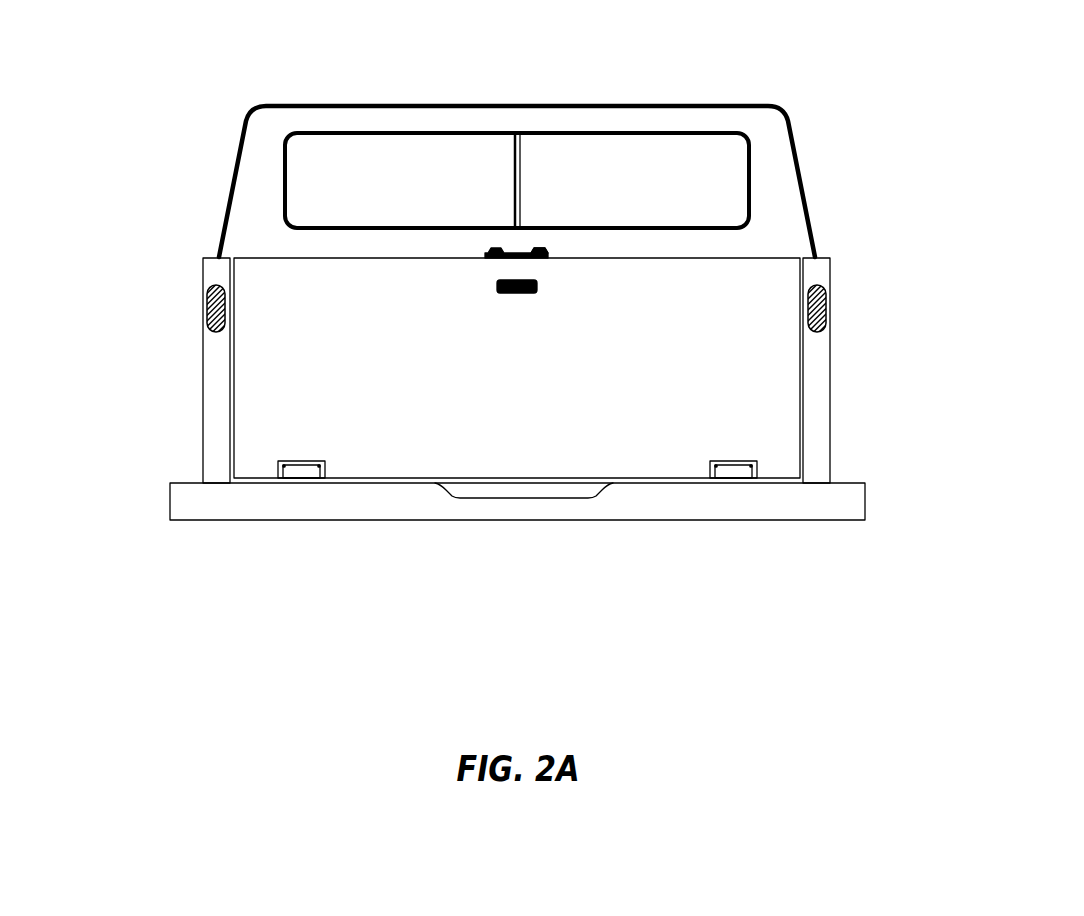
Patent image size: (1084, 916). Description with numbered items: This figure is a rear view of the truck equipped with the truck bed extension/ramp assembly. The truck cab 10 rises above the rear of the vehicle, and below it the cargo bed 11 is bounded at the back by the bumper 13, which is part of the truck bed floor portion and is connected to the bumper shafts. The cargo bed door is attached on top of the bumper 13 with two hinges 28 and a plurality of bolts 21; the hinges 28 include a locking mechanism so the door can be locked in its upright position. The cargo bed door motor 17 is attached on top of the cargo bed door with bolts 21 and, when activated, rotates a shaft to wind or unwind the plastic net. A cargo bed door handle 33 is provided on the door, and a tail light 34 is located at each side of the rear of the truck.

The truck cab 10 is at (230, 180).
The cargo bed 11 is at (198, 398).
The bumper 13 is at (510, 508).
The cargo bed door motor 17 is at (518, 252).
The bolt 21 is at (537, 248).
The hinge 28 is at (297, 475).
The cargo bed door handle 33 is at (538, 282).
The tail light 34 is at (207, 303).